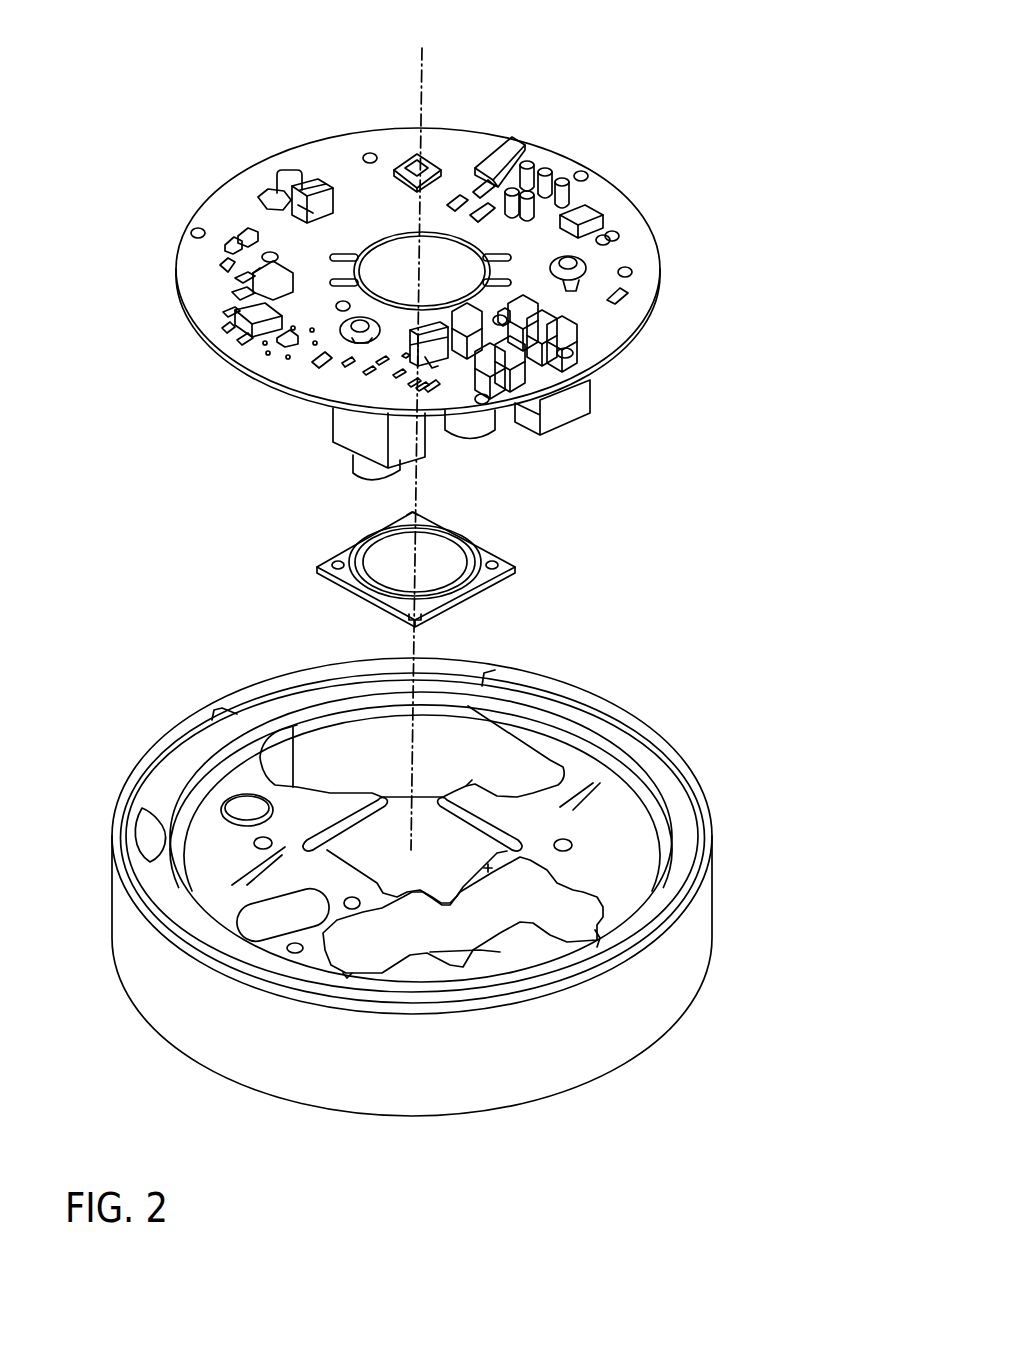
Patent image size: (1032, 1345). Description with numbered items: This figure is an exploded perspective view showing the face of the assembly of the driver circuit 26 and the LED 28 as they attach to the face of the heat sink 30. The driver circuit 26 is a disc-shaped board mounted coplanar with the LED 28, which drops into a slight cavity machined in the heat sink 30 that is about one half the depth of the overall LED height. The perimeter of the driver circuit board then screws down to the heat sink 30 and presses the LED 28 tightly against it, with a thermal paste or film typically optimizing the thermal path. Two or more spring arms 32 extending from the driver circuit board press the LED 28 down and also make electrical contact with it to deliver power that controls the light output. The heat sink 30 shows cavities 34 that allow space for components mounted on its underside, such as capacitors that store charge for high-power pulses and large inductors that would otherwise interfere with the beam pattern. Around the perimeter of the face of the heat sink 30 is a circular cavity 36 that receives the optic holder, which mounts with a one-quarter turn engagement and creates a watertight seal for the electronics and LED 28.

The driver circuit 26 is at (628, 245).
The LED 28 is at (518, 553).
The heat sink 30 is at (730, 828).
The spring arms 32 is at (376, 249).
The cavities 34 is at (483, 750).
The circular cavity 36 is at (158, 823).